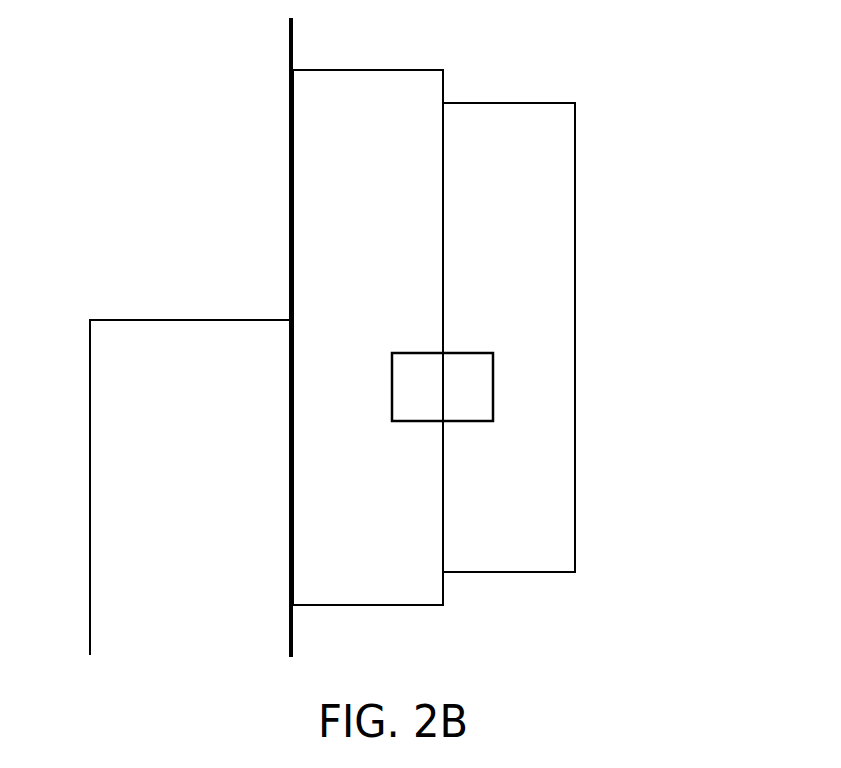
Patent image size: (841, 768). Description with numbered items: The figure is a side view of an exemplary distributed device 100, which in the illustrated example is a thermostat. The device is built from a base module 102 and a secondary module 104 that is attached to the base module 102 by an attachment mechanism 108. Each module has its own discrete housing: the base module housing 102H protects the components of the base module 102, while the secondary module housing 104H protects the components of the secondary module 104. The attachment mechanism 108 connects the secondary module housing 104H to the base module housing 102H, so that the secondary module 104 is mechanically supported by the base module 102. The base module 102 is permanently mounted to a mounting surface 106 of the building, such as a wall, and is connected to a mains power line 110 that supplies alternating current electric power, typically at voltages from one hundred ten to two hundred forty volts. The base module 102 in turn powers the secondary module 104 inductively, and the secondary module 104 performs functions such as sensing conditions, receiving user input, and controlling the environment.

The distributed device 100 is at (608, 89).
The base module 102 is at (444, 606).
The base module housing 102H is at (358, 606).
The secondary module 104 is at (577, 502).
The secondary module housing 104H is at (577, 555).
The mounting surface 106 is at (293, 50).
The attachment mechanism 108 is at (493, 384).
The mains power line 110 is at (149, 320).